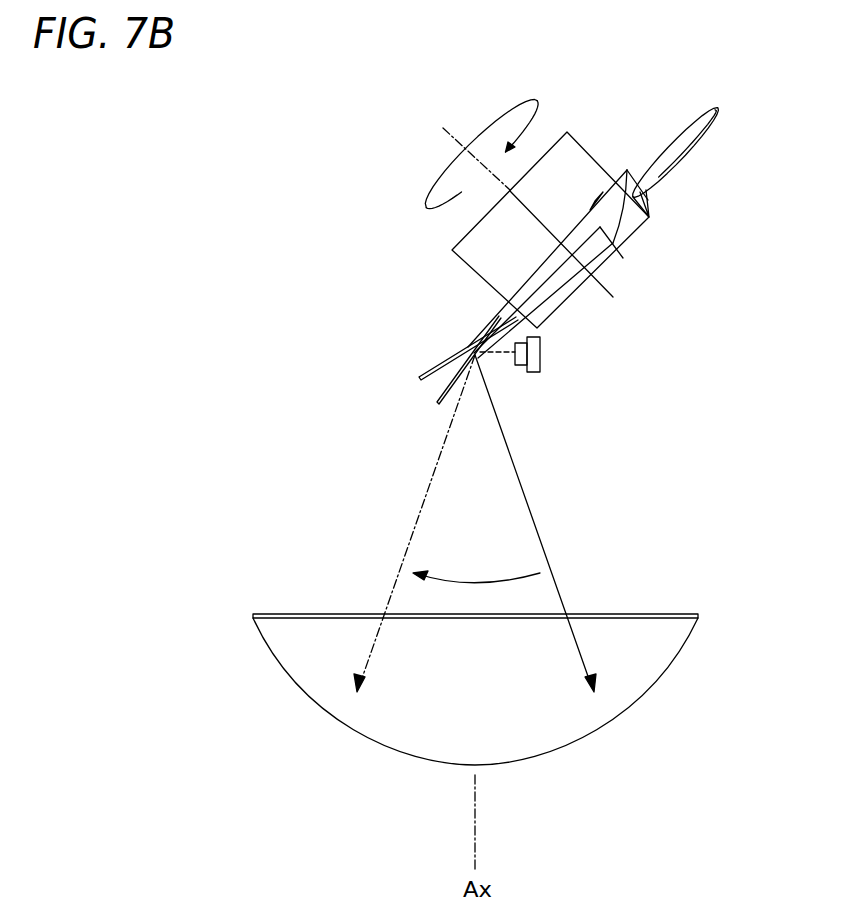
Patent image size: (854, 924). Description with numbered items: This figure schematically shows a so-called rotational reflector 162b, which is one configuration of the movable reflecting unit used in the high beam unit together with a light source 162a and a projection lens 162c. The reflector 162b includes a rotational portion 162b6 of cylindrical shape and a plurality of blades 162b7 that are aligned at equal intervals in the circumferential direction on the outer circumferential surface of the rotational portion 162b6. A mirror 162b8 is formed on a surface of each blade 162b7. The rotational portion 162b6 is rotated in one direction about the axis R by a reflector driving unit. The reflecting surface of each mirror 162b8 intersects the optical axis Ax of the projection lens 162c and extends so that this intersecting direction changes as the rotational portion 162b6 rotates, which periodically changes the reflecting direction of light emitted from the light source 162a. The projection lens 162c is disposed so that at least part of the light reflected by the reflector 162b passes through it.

The reflector 162b is at (383, 223).
The rotational portion 162b6 is at (598, 153).
The blades 162b7 is at (678, 133).
The mirror 162b8 is at (620, 255).
The light source 162a is at (543, 357).
The projection lens 162c is at (645, 693).